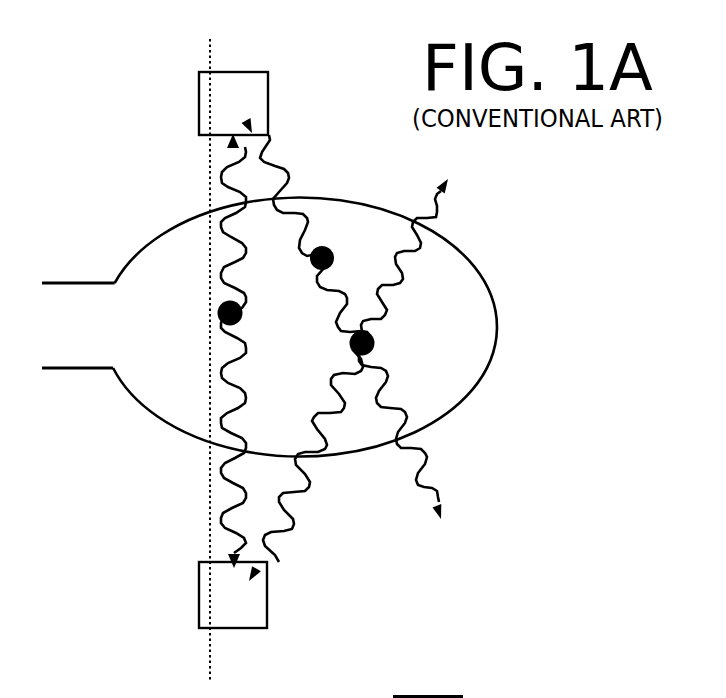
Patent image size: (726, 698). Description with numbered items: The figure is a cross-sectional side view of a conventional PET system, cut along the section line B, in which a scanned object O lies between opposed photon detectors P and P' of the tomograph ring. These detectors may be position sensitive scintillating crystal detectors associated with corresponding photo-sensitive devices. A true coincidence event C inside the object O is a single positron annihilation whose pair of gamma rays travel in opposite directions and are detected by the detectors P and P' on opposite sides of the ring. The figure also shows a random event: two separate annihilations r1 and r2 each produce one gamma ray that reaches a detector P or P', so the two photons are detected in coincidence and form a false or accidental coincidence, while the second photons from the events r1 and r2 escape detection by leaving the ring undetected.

The section line B- B is at (210, 39).
The scanned object O is at (269, 311).
The photon detector P is at (233, 103).
The photon detector P' is at (233, 595).
The true coincidence event C is at (251, 314).
The random event r1 is at (338, 249).
The random event r2 is at (382, 350).